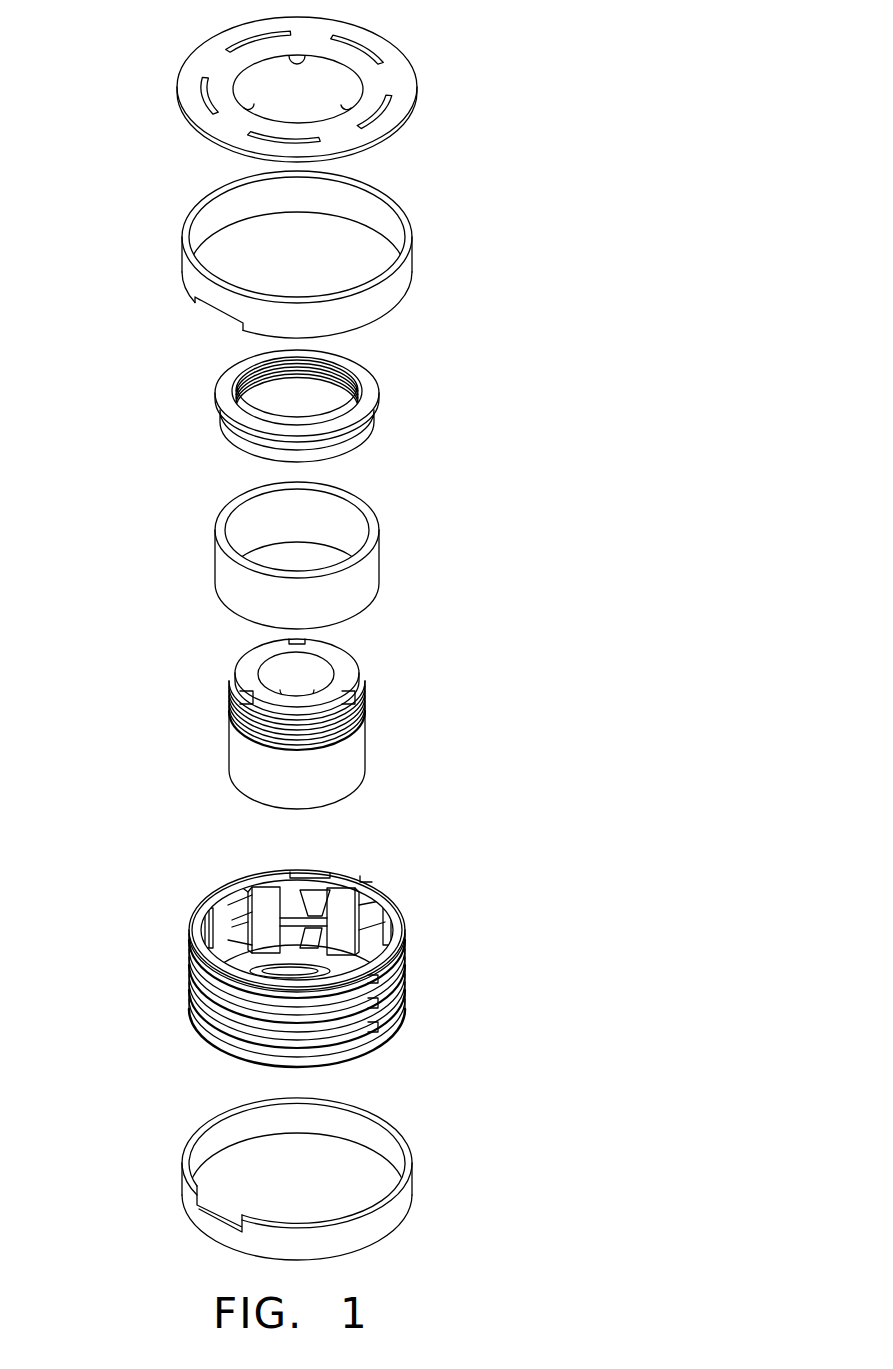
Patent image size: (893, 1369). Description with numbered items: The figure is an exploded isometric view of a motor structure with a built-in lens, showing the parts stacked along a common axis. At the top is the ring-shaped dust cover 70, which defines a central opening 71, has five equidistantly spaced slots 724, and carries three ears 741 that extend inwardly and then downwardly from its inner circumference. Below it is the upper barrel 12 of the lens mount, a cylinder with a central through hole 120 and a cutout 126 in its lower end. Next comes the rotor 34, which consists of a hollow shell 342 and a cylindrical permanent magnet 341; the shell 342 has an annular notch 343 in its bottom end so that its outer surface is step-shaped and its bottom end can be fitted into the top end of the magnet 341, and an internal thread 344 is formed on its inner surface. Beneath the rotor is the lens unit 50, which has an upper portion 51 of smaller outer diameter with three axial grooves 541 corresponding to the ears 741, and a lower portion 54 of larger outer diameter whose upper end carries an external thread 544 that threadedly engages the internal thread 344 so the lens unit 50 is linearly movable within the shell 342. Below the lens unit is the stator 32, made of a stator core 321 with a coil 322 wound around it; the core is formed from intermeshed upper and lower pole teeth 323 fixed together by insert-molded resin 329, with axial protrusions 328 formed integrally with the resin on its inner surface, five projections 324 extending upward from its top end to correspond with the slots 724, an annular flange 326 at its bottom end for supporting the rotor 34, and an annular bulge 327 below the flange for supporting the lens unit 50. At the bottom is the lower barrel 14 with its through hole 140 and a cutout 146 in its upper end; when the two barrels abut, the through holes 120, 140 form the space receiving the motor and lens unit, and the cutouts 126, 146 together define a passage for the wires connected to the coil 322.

The dust cover 70 is at (273, 81).
The opening 71 is at (330, 92).
The slots 724 is at (375, 62).
The ears 741 is at (297, 58).
The upper barrel 12 is at (304, 263).
The through hole 120 is at (245, 255).
The cutout 126 is at (213, 312).
The rotor 34 is at (350, 489).
The hollow shell 342 is at (314, 409).
The annular notch 343 is at (235, 442).
The internal thread 344 is at (238, 385).
The permanent magnet 341 is at (370, 570).
The lens unit 50 is at (297, 722).
The upper portion 51 is at (250, 668).
The grooves 541 is at (350, 699).
The external thread 544 is at (235, 710).
The lower portion 54 is at (249, 743).
The stator 32 is at (311, 942).
The stator core 321 is at (385, 912).
The coil 322 is at (405, 1005).
The pole teeth 323 is at (225, 915).
The projections 324 is at (210, 935).
The annular flange 326 is at (295, 950).
The annular bulge 327 is at (320, 970).
The protrusions 328 is at (270, 900).
The resin 329 is at (228, 905).
The lower barrel 14 is at (245, 1161).
The through hole 140 is at (258, 1167).
The cutout 146 is at (195, 1212).